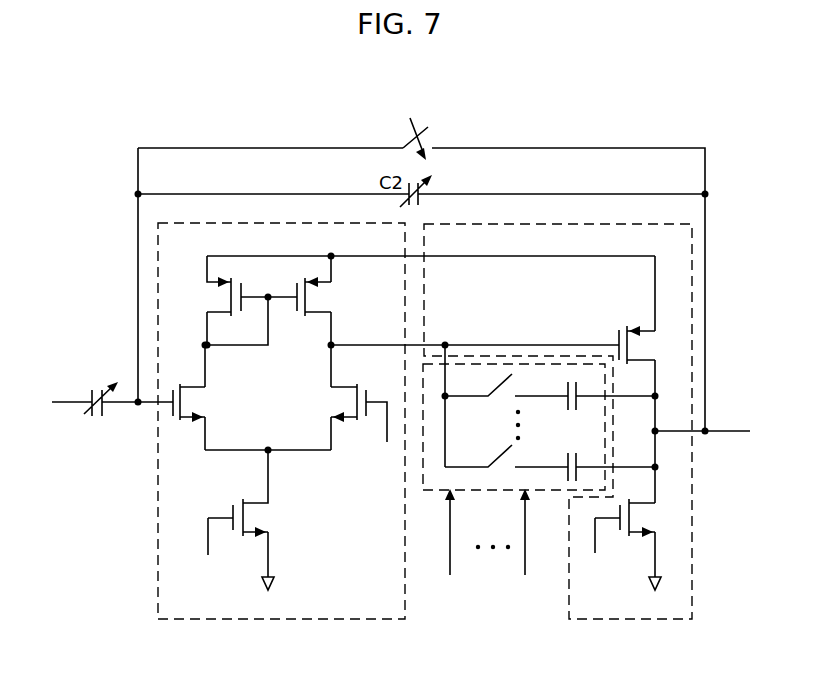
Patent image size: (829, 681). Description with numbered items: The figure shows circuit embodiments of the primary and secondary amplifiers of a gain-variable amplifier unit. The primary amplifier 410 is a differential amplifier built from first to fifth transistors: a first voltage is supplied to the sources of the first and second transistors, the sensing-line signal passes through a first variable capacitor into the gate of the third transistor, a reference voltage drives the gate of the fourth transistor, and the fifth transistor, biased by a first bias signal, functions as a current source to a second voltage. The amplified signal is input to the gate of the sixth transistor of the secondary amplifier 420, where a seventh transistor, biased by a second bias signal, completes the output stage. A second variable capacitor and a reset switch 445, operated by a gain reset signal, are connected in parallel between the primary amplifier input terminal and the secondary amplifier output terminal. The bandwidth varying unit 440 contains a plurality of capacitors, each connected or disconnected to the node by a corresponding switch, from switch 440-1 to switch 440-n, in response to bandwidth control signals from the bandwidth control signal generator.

The primary amplifier 410 is at (158, 558).
The secondary amplifier 420 is at (693, 561).
The bandwidth varying unit 440 is at (593, 405).
The switch 440-1 is at (499, 378).
The switch 440-n is at (500, 453).
The reset switch 445 is at (425, 120).